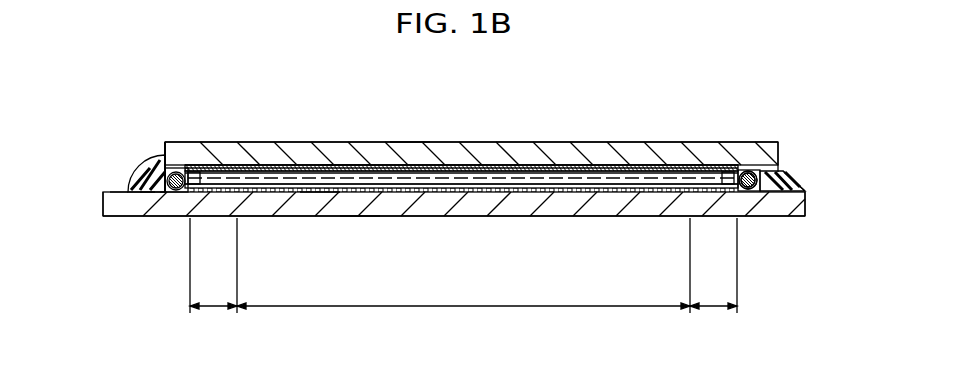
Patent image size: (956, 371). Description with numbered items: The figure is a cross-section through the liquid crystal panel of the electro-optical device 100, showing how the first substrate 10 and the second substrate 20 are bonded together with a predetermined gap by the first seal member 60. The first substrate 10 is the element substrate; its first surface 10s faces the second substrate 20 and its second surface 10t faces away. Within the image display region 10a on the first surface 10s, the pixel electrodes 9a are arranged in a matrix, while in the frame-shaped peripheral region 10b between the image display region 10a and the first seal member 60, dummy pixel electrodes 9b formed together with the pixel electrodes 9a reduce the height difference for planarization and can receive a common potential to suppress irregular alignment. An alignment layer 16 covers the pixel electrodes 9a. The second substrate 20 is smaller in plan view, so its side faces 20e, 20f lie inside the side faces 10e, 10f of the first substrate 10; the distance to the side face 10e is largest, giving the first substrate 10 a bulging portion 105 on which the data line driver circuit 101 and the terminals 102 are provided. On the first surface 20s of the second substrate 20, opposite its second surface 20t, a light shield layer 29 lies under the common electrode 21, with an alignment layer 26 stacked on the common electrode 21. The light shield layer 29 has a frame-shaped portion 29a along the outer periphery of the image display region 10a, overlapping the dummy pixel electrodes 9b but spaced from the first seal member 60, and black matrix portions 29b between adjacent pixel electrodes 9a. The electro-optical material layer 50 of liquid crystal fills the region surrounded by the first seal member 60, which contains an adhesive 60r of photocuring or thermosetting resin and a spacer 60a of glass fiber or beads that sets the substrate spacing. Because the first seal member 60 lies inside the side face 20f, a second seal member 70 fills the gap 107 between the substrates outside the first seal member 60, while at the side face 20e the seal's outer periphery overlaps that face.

The electro-optical device 100 is at (677, 82).
The first substrate 10 is at (636, 222).
The side face of the first substrate 10e is at (103, 206).
The side face of the first substrate 10f is at (806, 204).
The first surface of the first substrate 10s is at (319, 217).
The second surface of the first substrate 10t is at (362, 217).
The image display region 10a is at (463, 278).
The peripheral region 10b is at (463, 278).
The second substrate 20 is at (744, 135).
The side face of the second substrate 20e is at (163, 153).
The side face of the second substrate 20f is at (782, 158).
The first surface of the second substrate 20s is at (337, 141).
The second surface of the second substrate 20t is at (410, 141).
The common electrode 21 is at (371, 160).
The alignment layer 26 is at (519, 168).
The alignment layer 16 is at (575, 176).
The light shield layer 29 is at (243, 168).
The frame-shaped portion 29a is at (725, 165).
The black matrix portions 29b is at (483, 168).
The pixel electrodes 9a is at (461, 193).
The dummy pixel electrodes 9b is at (722, 180).
The electro-optical material layer 50 is at (592, 192).
The first seal member 60 is at (172, 200).
The spacer 60a is at (749, 193).
The adhesive 60r is at (770, 194).
The second seal member 70 is at (152, 160).
The data line driver circuit 101 is at (162, 194).
The terminals 102 is at (115, 191).
The bulging portion 105 is at (147, 192).
The gap 107 is at (788, 170).